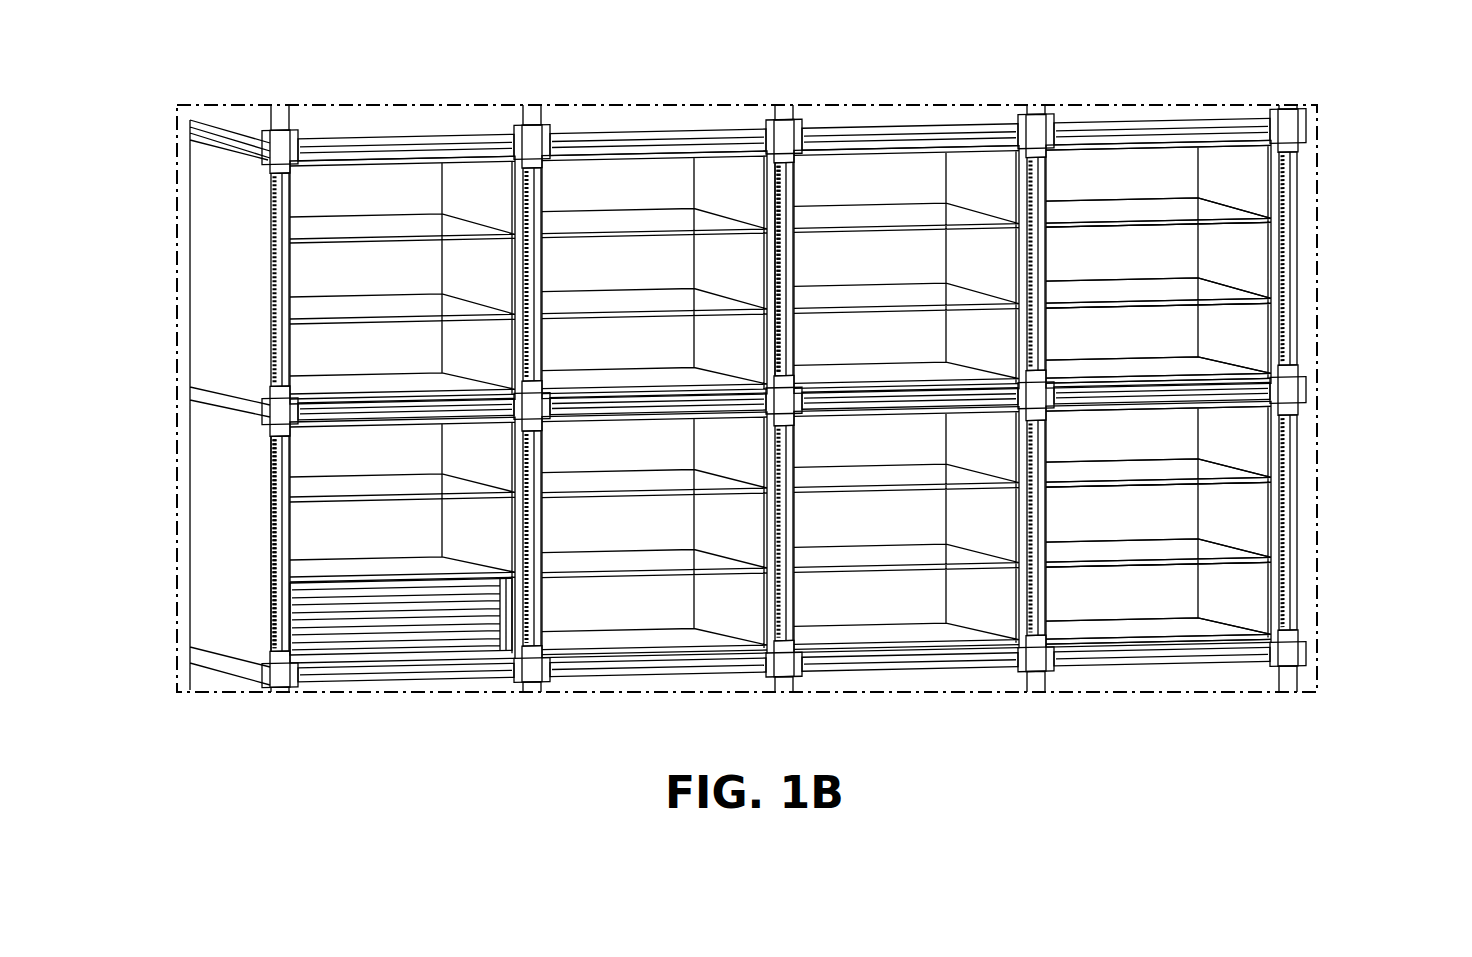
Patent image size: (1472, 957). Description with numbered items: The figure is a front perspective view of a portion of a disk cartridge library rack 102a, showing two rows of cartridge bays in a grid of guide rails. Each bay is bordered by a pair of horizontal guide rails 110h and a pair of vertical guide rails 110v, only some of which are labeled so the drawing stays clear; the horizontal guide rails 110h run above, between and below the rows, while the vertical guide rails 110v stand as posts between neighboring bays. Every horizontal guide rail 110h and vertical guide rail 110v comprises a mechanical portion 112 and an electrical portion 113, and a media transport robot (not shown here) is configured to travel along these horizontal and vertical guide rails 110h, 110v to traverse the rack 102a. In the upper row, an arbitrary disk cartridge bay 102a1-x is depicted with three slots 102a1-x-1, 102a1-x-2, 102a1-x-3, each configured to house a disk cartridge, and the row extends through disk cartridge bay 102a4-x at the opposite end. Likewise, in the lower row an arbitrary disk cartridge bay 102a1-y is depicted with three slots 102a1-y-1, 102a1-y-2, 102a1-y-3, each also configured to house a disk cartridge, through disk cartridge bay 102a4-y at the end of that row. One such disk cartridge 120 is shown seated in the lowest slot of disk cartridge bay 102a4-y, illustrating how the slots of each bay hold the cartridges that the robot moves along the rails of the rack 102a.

The rack 102a is at (224, 45).
The horizontal guide rail 110h is at (384, 410).
The vertical guide rail 110v is at (1287, 185).
The mechanical portion 112 is at (768, 185).
The electrical portion 113 is at (787, 185).
The disk cartridge bay 102a4-x is at (332, 263).
The disk cartridge bay 102a4-y is at (322, 538).
The disk cartridge 120 is at (437, 630).
The disk cartridge bay 102a1-x is at (1157, 263).
The slot 102a1-x-1 is at (1244, 163).
The slot 102a1-x-2 is at (1240, 258).
The slot 102a1-x-3 is at (1240, 322).
The disk cartridge bay 102a1-y is at (1155, 577).
The slot 102a1-y-1 is at (1215, 432).
The slot 102a1-y-2 is at (1215, 507).
The slot 102a1-y-3 is at (1215, 598).